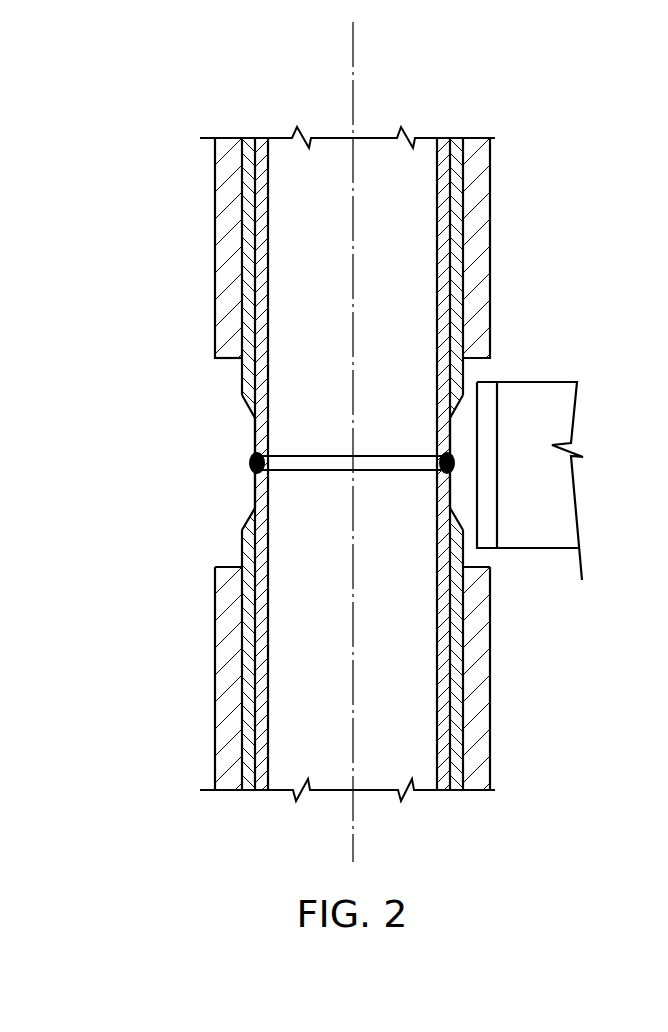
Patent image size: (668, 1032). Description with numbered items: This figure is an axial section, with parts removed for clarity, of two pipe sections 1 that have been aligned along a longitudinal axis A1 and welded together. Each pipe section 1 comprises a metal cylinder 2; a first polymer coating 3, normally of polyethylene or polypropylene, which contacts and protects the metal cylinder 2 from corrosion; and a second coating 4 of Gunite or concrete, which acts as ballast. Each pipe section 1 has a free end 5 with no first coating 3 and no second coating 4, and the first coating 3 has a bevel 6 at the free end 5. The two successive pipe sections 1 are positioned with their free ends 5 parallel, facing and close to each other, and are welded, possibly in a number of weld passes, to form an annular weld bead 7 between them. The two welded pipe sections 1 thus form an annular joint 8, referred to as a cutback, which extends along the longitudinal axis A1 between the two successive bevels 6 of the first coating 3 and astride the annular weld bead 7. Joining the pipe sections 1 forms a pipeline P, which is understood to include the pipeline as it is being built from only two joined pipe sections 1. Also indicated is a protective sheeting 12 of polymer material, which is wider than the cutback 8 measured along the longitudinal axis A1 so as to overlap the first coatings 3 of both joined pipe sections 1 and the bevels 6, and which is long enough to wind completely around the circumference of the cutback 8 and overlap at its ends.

The pipe section 1 is at (552, 200).
The metal cylinder 2 is at (262, 142).
The first polymer coating 3 is at (457, 140).
The second coating 4 is at (480, 150).
The free end 5 is at (148, 415).
The bevel 6 is at (237, 410).
The annular weld bead 7 is at (250, 463).
The annular joint 8 is at (193, 386).
The protective sheeting 12 is at (540, 550).
The pipeline P is at (178, 704).
The longitudinal axis A1 is at (356, 42).